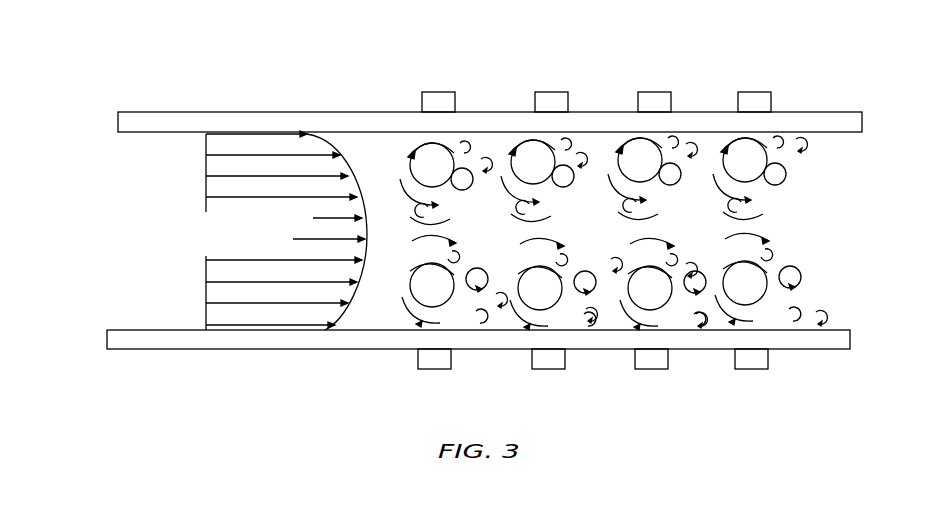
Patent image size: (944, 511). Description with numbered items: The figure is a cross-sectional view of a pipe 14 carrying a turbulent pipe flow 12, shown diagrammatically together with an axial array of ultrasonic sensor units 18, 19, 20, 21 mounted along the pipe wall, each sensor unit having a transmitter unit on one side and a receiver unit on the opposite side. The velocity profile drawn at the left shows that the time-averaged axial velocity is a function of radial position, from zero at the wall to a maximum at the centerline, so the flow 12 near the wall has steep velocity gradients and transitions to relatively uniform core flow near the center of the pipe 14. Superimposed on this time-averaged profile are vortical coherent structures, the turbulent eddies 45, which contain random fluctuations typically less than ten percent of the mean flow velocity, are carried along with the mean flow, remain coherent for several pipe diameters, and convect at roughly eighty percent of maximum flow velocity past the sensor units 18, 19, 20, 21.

The turbulent pipe flow 12 is at (372, 158).
The pipe 14 is at (830, 112).
The ultrasonic sensor unit 18 is at (425, 92).
The ultrasonic sensor unit 19 is at (537, 92).
The ultrasonic sensor unit 20 is at (660, 92).
The ultrasonic sensor unit 21 is at (745, 92).
The turbulent eddies 45 is at (772, 178).